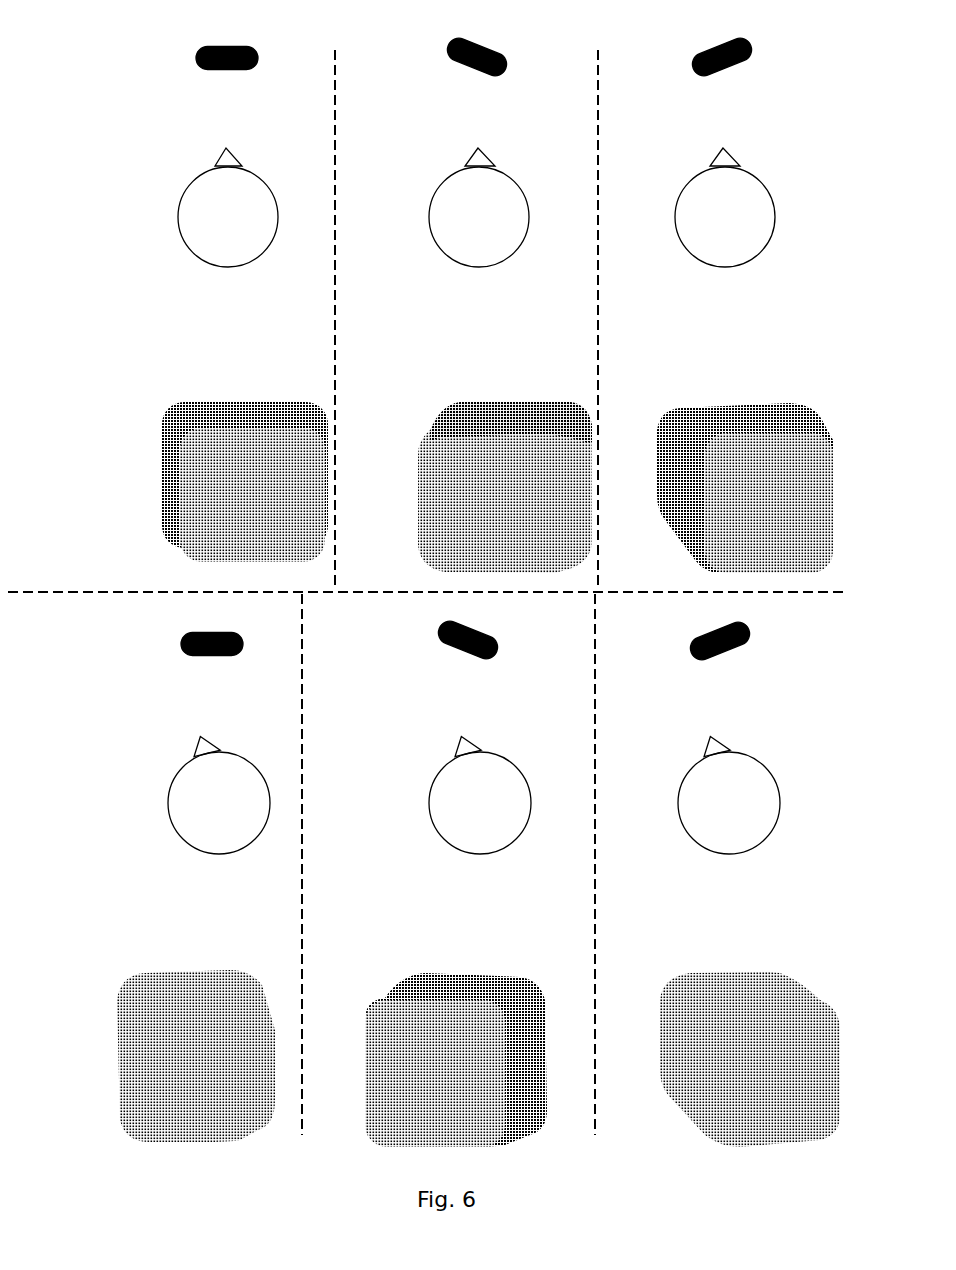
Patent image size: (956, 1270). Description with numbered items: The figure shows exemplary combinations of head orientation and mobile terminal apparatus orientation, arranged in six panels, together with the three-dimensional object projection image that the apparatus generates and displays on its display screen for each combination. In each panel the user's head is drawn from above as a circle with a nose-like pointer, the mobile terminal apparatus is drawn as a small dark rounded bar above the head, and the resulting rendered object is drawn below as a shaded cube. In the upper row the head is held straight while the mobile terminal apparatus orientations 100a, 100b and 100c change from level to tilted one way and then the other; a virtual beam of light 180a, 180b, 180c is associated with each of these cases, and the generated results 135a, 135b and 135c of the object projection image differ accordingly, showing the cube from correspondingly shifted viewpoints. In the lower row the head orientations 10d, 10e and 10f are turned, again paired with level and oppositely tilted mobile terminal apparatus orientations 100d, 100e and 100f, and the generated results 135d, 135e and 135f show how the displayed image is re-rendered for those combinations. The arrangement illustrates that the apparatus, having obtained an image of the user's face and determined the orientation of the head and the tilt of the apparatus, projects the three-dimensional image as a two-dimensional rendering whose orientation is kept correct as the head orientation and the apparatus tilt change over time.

The head orientation 10d is at (167, 798).
The head orientation 10e is at (425, 800).
The head orientation 10f is at (677, 802).
The mobile terminal apparatus orientation 100a is at (197, 55).
The mobile terminal apparatus orientation 100b is at (485, 43).
The mobile terminal apparatus orientation 100c is at (750, 50).
The mobile terminal apparatus orientation 100d is at (180, 643).
The mobile terminal apparatus orientation 100e is at (487, 633).
The mobile terminal apparatus orientation 100f is at (737, 627).
The generated result of the object projection image 135a is at (170, 480).
The generated result of the object projection image 135b is at (442, 493).
The generated result of the object projection image 135c is at (688, 483).
The generated result of the object projection image 135d is at (133, 1060).
The generated result of the object projection image 135e is at (393, 1060).
The generated result of the object projection image 135f is at (687, 1068).
The virtual beam of light 180a is at (220, 123).
The virtual beam of light 180b is at (470, 123).
The virtual beam of light 180c is at (713, 112).